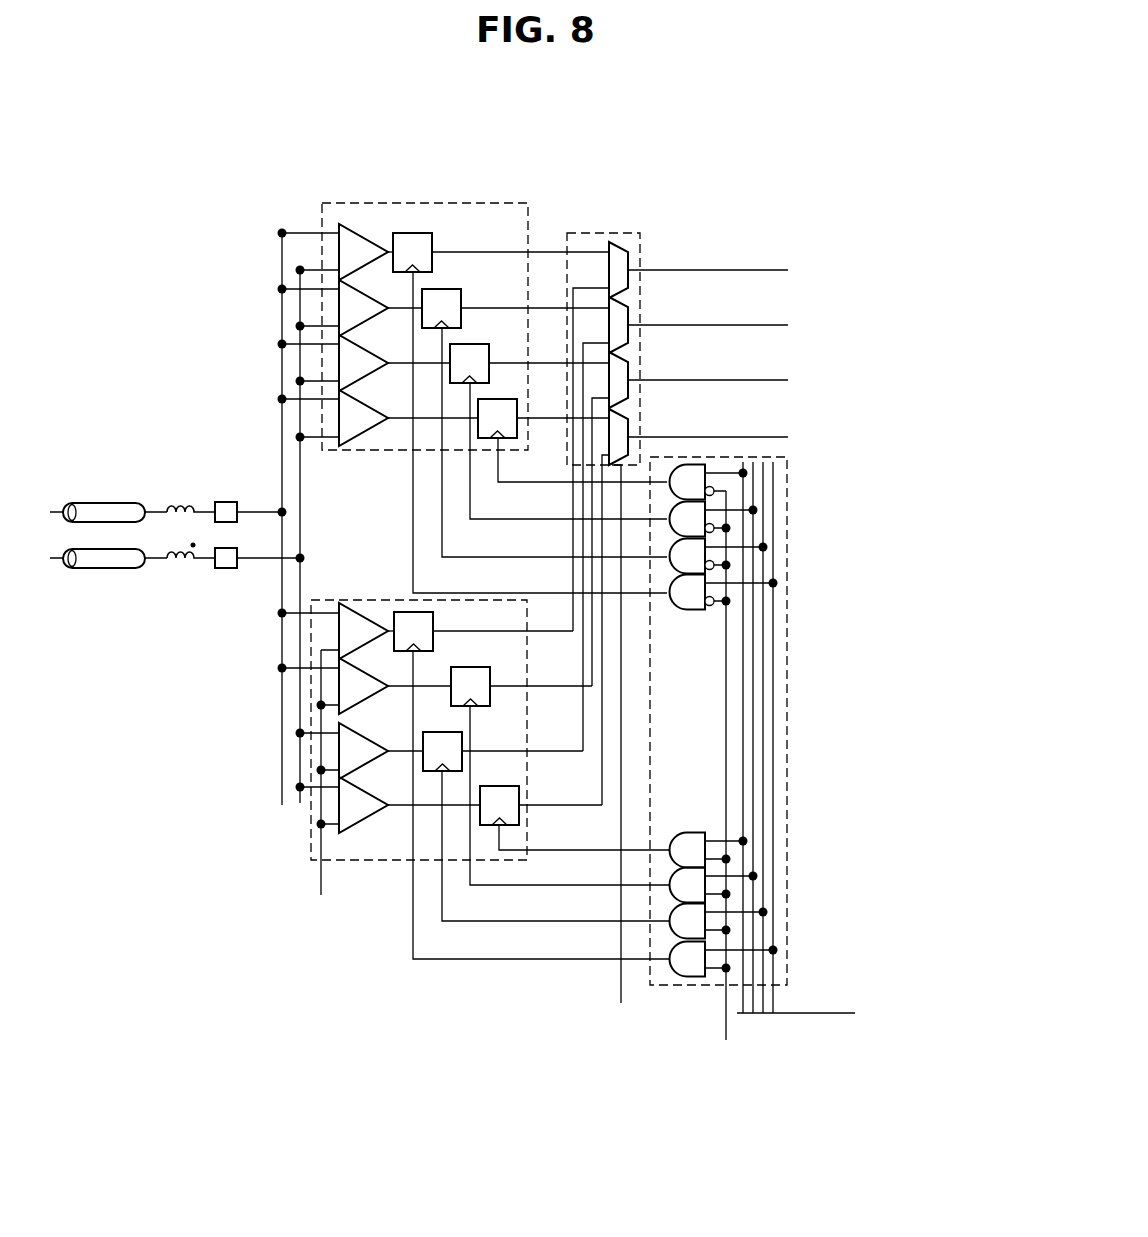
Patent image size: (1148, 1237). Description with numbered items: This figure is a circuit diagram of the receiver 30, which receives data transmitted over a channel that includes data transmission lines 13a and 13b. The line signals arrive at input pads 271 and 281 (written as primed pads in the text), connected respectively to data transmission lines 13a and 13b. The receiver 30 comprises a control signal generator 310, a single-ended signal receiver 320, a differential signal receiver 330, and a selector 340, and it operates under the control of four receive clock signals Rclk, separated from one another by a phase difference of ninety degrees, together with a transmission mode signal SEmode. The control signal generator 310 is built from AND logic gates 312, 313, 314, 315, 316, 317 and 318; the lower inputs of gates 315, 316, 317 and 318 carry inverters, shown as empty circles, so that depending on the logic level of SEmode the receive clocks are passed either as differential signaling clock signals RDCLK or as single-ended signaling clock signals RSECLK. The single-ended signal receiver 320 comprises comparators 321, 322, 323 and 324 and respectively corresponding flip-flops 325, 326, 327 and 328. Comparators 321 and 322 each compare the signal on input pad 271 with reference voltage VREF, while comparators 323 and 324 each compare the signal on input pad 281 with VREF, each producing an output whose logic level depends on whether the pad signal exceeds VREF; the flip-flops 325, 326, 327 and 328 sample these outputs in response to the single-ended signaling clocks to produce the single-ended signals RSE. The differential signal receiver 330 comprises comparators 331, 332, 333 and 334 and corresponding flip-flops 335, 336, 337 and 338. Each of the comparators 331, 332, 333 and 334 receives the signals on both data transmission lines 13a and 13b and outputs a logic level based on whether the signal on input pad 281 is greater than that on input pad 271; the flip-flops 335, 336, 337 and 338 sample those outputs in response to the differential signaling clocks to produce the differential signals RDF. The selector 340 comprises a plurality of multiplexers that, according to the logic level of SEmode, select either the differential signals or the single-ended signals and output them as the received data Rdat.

The receiver 30 is at (707, 154).
The data transmission line 13a is at (105, 569).
The data transmission line 13b is at (101, 503).
The input pad 271 is at (223, 502).
The input pad 281 is at (225, 568).
The differential signal receiver 330 is at (497, 203).
The comparator 331 is at (335, 252).
The comparator 332 is at (335, 308).
The comparator 333 is at (335, 363).
The comparator 334 is at (335, 418).
The flip-flop 335 is at (410, 252).
The flip-flop 336 is at (424, 308).
The flip-flop 337 is at (438, 363).
The flip-flop 338 is at (452, 418).
The selector 340 is at (627, 233).
The control signal generator 310 is at (789, 852).
The AND logic gate 315 is at (724, 592).
The AND logic gate 316 is at (719, 556).
The AND logic gate 317 is at (714, 519).
The AND logic gate 318 is at (709, 482).
The AND logic gate 314 is at (709, 850).
The AND logic gate 313 is at (714, 885).
The AND logic gate 312 is at (724, 940).
The single-ended signal receiver 320 is at (306, 852).
The comparator 321 is at (335, 631).
The comparator 322 is at (335, 686).
The comparator 323 is at (344, 751).
The comparator 324 is at (344, 805).
The flip-flop 325 is at (410, 631).
The flip-flop 326 is at (439, 686).
The flip-flop 327 is at (425, 751).
The flip-flop 328 is at (453, 805).